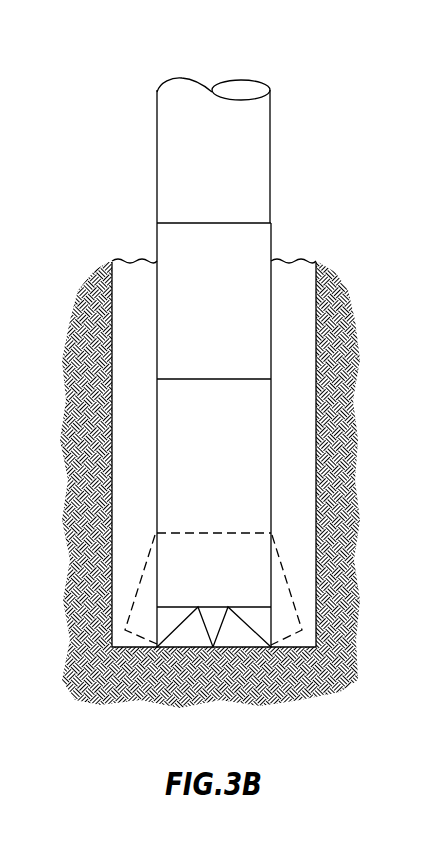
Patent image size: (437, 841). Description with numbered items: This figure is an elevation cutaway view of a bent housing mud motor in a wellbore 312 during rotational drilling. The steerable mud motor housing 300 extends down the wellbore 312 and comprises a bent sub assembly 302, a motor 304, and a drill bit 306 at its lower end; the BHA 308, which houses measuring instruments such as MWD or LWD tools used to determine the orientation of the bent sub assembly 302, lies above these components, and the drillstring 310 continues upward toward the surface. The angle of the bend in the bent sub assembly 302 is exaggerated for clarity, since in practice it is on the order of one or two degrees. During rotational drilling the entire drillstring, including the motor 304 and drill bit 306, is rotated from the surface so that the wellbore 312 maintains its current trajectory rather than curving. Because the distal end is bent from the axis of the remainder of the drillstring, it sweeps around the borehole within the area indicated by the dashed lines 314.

The steerable mud motor housing 300 is at (235, 67).
The bent sub assembly 302 is at (233, 458).
The motor 304 is at (238, 587).
The drill bit 306 is at (222, 625).
The BHA 308 is at (238, 318).
The drill pipe 310 is at (278, 132).
The wellbore 312 is at (290, 268).
The dashed lines 314 is at (290, 577).